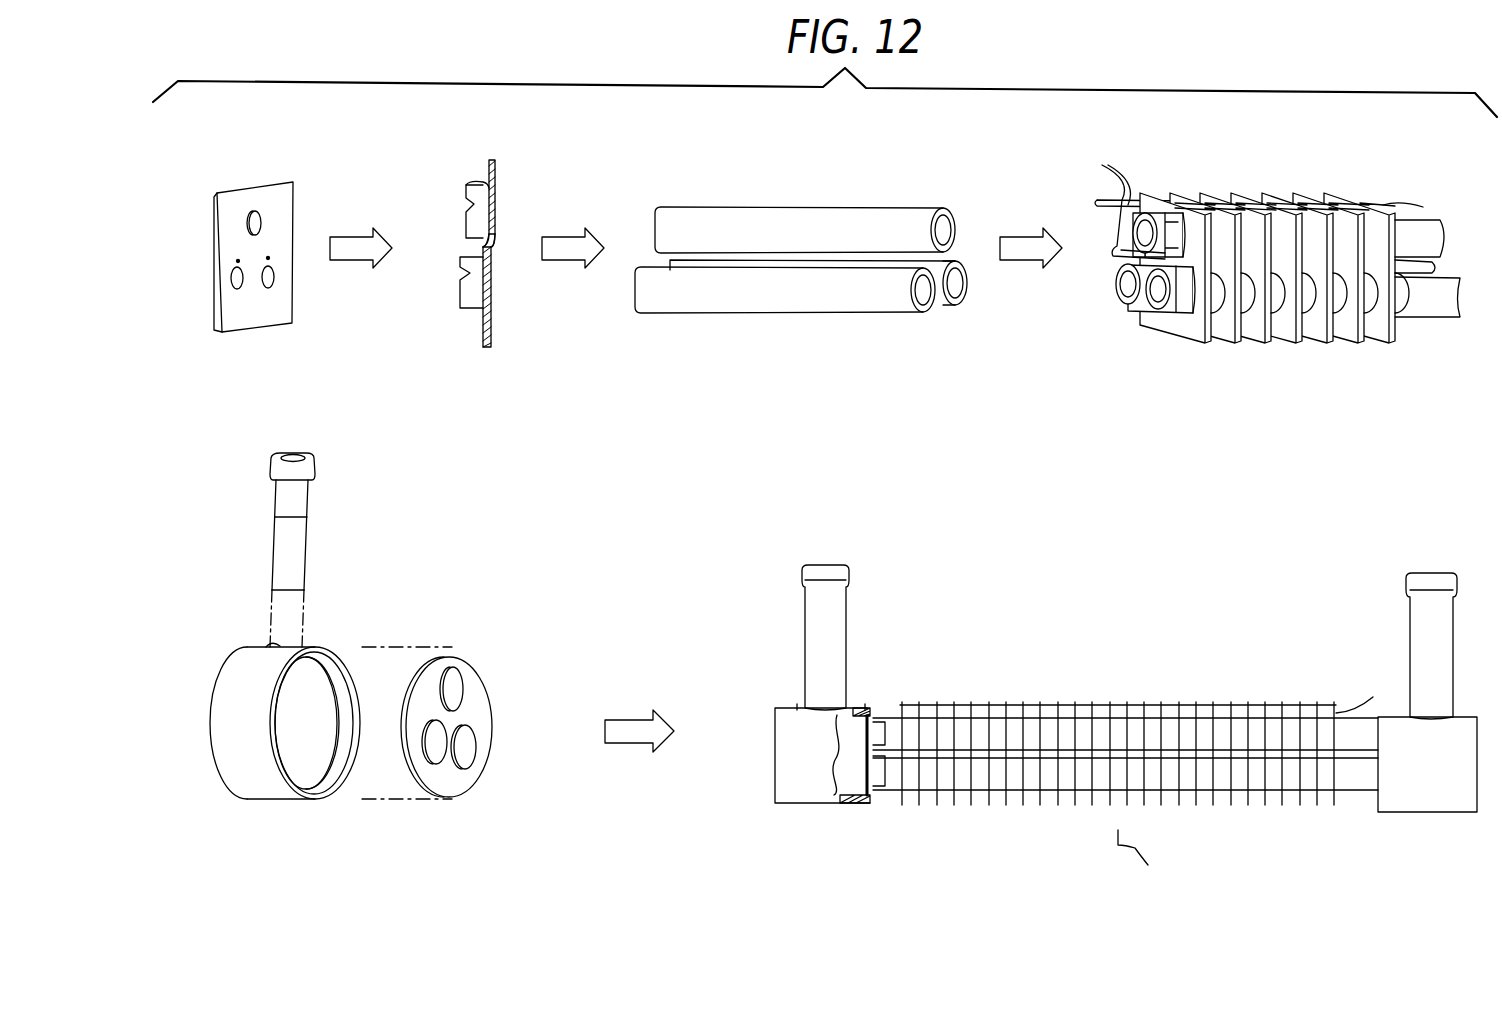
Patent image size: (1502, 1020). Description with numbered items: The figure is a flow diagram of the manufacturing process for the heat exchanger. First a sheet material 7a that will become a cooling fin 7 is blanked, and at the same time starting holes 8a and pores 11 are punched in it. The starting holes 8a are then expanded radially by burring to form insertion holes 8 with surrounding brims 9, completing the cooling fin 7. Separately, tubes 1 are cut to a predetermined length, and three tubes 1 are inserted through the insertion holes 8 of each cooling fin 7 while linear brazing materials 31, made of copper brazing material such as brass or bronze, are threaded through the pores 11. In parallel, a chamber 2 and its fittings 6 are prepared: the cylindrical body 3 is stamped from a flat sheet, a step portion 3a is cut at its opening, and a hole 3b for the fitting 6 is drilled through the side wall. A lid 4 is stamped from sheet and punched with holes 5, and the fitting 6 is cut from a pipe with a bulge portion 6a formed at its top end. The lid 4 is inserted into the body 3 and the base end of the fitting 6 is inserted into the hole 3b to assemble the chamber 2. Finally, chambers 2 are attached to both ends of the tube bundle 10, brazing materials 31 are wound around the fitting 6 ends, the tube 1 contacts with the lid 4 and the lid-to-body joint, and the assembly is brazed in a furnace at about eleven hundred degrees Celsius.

The tube 1 is at (843, 190).
The chamber 2 is at (817, 676).
The body 3 is at (300, 754).
The step portion 3a is at (340, 773).
The hole 3b is at (281, 646).
The lid 4 is at (456, 702).
The hole 5 is at (460, 690).
The fitting 6 is at (878, 581).
The bulge portion 6a is at (313, 463).
The cooling fin 7 is at (503, 152).
The sheet material 7a is at (237, 193).
The insertion hole 8 is at (481, 227).
The starting hole 8a is at (250, 222).
The brim 9 is at (477, 188).
The tube bundle 10 is at (1144, 860).
The pore 11 is at (255, 205).
The linear brazing material 31 is at (884, 830).